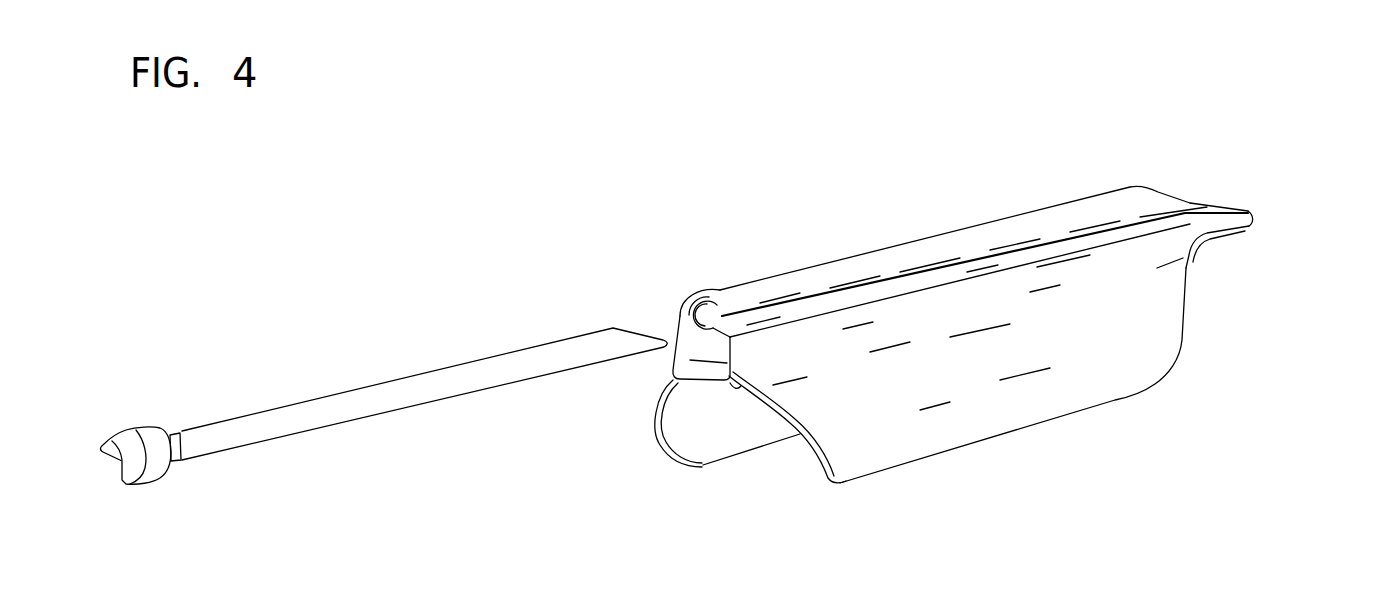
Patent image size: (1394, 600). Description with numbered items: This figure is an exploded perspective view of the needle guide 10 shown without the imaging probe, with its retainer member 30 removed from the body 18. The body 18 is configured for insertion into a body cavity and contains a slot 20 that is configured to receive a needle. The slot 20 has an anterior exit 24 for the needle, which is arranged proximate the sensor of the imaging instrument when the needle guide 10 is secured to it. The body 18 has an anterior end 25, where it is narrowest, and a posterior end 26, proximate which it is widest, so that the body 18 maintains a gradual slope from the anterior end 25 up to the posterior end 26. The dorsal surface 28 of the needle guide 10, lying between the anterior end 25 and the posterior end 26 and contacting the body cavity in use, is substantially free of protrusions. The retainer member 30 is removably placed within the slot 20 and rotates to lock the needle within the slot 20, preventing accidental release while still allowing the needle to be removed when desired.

The needle guide 10 is at (1066, 143).
The body 18 is at (983, 408).
The slot 20 is at (773, 316).
The anterior exit 24 is at (1207, 213).
The anterior end 25 is at (1251, 228).
The posterior end 26 is at (673, 379).
The dorsal surface 28 is at (868, 252).
The retainer member 30 is at (312, 403).